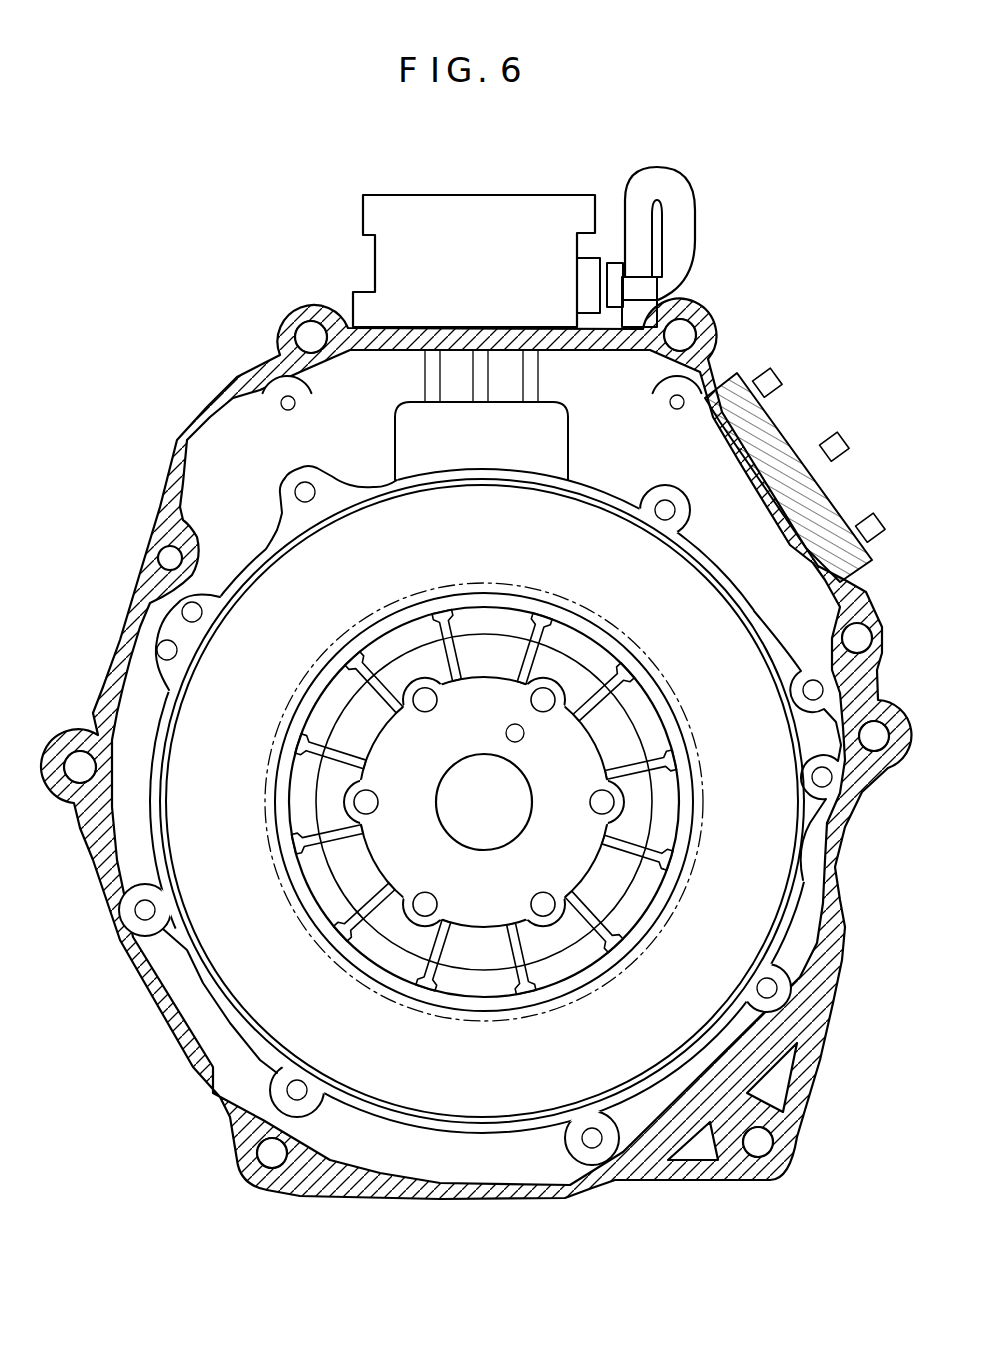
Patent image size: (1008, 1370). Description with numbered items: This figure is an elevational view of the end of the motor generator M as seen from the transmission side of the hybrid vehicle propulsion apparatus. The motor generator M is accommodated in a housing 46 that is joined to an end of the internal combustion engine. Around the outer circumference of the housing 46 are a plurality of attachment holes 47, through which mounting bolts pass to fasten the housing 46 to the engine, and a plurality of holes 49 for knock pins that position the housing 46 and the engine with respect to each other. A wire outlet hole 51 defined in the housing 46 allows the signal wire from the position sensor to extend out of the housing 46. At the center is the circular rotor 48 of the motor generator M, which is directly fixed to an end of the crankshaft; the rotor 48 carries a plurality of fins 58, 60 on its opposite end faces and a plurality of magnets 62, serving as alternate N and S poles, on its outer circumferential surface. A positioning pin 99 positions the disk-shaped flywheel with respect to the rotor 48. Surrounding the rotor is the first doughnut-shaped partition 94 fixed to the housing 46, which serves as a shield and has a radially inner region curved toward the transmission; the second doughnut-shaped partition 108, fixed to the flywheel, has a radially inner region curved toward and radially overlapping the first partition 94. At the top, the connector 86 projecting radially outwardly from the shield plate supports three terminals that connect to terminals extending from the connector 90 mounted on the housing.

The housing 46 is at (848, 818).
The attachment holes 47 is at (311, 337).
The rotor 48 is at (325, 795).
The holes 49 is at (288, 400).
The wire outlet hole 51 is at (797, 430).
The fins 58 is at (484, 802).
The fins 60 is at (498, 871).
The magnets 62 is at (310, 893).
The connector 86 is at (560, 442).
The connector 90 is at (530, 205).
The first partition 94 is at (478, 1070).
The positioning pin 99 is at (512, 728).
The second partition 108 is at (320, 948).
The motor generator M is at (740, 578).